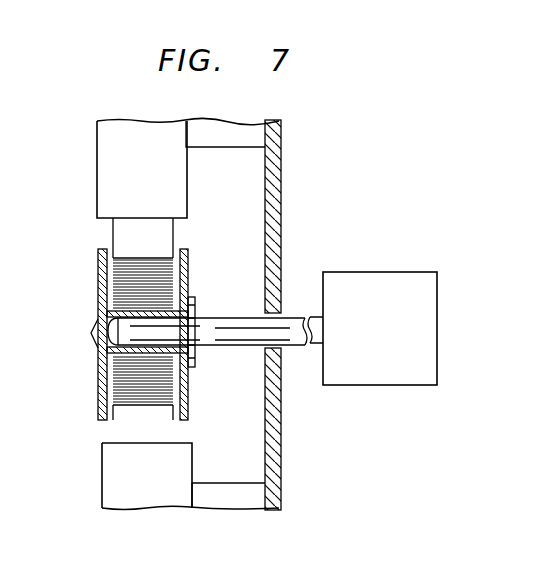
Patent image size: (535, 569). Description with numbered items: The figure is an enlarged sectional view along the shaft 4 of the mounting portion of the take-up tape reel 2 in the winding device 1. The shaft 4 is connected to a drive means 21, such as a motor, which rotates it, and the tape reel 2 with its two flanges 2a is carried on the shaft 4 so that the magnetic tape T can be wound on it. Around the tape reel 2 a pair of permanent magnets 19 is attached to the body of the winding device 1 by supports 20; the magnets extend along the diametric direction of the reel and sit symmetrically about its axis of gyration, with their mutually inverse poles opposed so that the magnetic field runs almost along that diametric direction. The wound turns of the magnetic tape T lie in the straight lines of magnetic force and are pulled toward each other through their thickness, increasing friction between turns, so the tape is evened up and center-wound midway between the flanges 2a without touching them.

The winding device 1 is at (283, 440).
The take-up tape reel 2 is at (142, 319).
The flanges 2a is at (97, 263).
The magnetic tape T is at (113, 236).
The shaft 4 is at (291, 318).
The permanent magnets 19 is at (97, 149).
The supports 20 is at (240, 127).
The drive means 21 is at (393, 272).